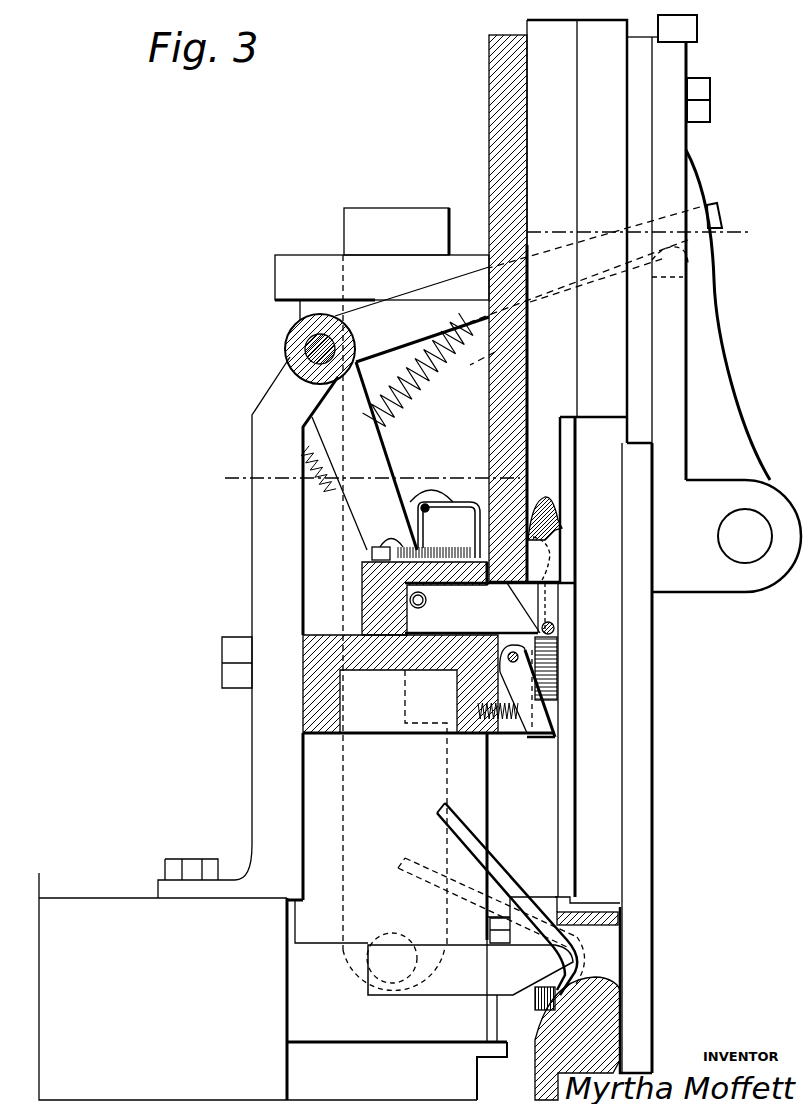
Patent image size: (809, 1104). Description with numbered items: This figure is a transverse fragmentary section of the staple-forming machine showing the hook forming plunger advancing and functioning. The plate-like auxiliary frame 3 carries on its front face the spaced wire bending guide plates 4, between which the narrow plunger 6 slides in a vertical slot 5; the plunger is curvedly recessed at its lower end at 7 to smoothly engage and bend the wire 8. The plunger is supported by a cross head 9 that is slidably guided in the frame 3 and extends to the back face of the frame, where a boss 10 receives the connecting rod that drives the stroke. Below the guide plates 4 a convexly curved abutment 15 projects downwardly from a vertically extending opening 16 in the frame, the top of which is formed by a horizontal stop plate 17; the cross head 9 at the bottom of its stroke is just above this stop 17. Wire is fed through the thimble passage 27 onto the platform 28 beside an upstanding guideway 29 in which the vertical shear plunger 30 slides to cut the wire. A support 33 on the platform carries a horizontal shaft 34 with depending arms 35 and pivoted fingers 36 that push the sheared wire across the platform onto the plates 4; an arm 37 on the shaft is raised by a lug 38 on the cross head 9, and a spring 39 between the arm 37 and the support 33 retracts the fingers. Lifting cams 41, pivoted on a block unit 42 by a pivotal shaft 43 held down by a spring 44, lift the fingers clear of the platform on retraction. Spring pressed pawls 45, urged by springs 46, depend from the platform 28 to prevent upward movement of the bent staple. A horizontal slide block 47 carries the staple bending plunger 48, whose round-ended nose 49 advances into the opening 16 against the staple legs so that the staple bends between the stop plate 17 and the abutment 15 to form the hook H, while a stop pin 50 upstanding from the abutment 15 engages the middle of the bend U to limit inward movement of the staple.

The auxiliary frame 3 is at (489, 356).
The wire bending guide plates 4 is at (548, 672).
The vertical slot 5 is at (572, 752).
The plunger 6 is at (543, 460).
The curved recess 7 is at (558, 508).
The wire 8 is at (555, 626).
The cross head 9 is at (670, 365).
The boss 10 is at (740, 585).
The convexly curved abutment 15 is at (597, 1005).
The vertically extending opening 16 is at (603, 940).
The stop plate 17 is at (593, 912).
The thimble passage 27 is at (426, 604).
The platform 28 is at (318, 632).
The guideway 29 is at (328, 778).
The shear plunger 30 is at (373, 208).
The support 33 is at (268, 528).
The horizontal shaft 34 is at (305, 352).
The depending arms 35 is at (375, 460).
The fingers 36 is at (523, 593).
The arm 37 is at (398, 312).
The lug 38 is at (625, 282).
The spring 39 is at (395, 380).
The lifting cams 41 is at (432, 490).
The block unit 42 is at (362, 580).
The pivotal shaft 43 is at (420, 508).
The spring 44 is at (373, 542).
The spring pressed pawls 45 is at (540, 718).
The springs 46 is at (470, 708).
The slide block 47 is at (90, 925).
The staple bending plunger 48 is at (375, 1022).
The nose 49 is at (547, 913).
The stop pin 50 is at (598, 975).
The hook H is at (600, 960).
The bend U is at (545, 985).